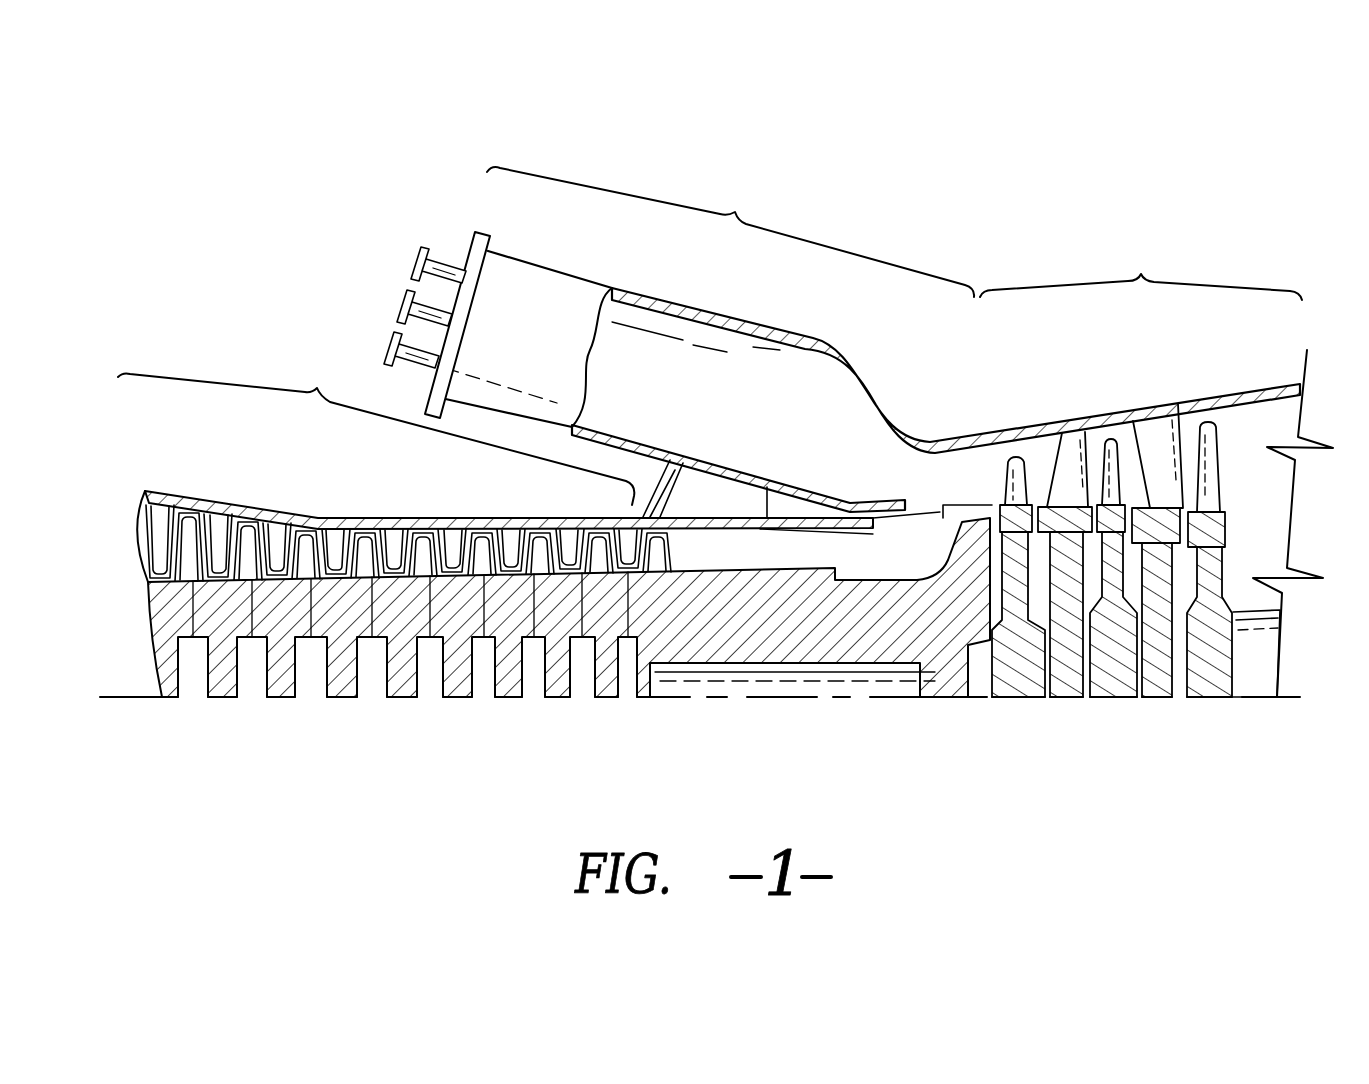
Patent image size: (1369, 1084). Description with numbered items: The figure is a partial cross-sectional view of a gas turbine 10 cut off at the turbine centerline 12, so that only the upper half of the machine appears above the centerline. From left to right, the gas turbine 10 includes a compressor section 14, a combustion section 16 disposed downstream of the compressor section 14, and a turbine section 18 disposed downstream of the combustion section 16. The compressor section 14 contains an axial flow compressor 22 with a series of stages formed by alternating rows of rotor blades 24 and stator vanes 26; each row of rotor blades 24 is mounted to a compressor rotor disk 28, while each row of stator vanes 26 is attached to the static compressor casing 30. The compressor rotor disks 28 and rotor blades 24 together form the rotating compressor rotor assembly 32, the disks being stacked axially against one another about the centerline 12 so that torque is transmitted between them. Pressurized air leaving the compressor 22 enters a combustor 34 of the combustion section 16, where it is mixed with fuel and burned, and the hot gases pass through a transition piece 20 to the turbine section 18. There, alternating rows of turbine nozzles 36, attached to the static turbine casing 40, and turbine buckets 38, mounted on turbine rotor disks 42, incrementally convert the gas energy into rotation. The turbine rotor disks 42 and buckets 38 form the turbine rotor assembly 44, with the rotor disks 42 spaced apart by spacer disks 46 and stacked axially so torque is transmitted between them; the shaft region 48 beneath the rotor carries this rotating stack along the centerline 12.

The gas turbine 10 is at (250, 238).
The turbine centerline 12 is at (139, 700).
The compressor section 14 is at (376, 431).
The combustion section 16 is at (679, 297).
The turbine section 18 is at (1141, 266).
The transition piece 20 is at (737, 408).
The axial flow compressor 22 is at (240, 505).
The rotor blades 24 is at (218, 528).
The stator vanes 26 is at (312, 545).
The compressor rotor disk 28 is at (290, 673).
The compressor casing 30 is at (372, 545).
The compressor rotor assembly 32 is at (556, 722).
The combustor 34 is at (641, 283).
The turbine nozzles 36 is at (1088, 470).
The turbine buckets 38 is at (1017, 465).
The turbine casing 40 is at (1197, 403).
The turbine rotor disk 42 is at (1015, 675).
The turbine rotor assembly 44 is at (1139, 742).
The spacer disks 46 is at (1068, 655).
The shaft 48 is at (770, 695).